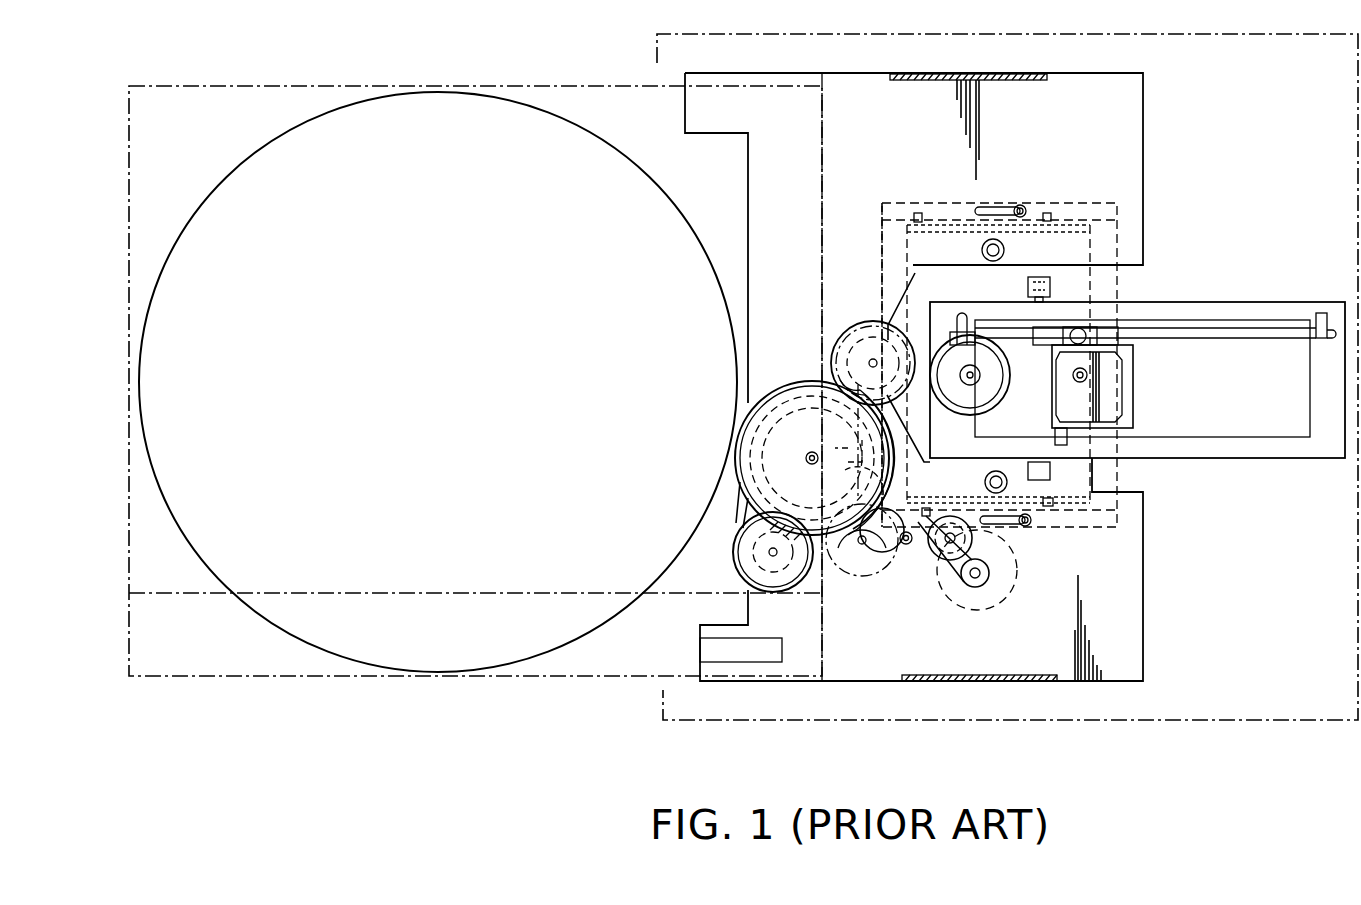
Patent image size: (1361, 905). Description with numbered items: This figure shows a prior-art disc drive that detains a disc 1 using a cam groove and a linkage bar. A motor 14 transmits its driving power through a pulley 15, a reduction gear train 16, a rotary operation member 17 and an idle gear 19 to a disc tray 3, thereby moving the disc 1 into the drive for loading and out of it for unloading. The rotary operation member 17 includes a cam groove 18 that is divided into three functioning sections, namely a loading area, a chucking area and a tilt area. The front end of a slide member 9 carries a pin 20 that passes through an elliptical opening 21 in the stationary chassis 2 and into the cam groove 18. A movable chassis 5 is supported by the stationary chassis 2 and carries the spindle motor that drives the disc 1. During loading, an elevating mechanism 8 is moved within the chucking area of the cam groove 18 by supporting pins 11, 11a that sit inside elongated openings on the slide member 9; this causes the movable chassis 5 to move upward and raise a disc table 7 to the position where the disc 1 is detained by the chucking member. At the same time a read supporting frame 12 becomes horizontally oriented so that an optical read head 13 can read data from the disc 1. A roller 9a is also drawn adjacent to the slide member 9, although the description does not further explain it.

The disc 1 is at (273, 137).
The stationary chassis 2 is at (884, 72).
The disc tray 3 is at (188, 86).
The movable chassis 5 is at (915, 272).
The disc table 7 is at (987, 400).
The elevating mechanism 8 is at (873, 263).
The slide member 9 is at (880, 238).
The roller 9a is at (838, 366).
The supporting pin 11 is at (921, 213).
The supporting pin 11a is at (1046, 212).
The read supporting frame 12 is at (1192, 302).
The optical read head 13 is at (1118, 412).
The motor 14 is at (1008, 600).
The pulley 15 is at (973, 590).
The reduction gear train 16 is at (882, 586).
The rotary operation member 17 is at (755, 497).
The cam groove 18 is at (752, 428).
The idle gear 19 is at (752, 573).
The pin 20 is at (867, 483).
The elliptical opening 21 is at (866, 450).